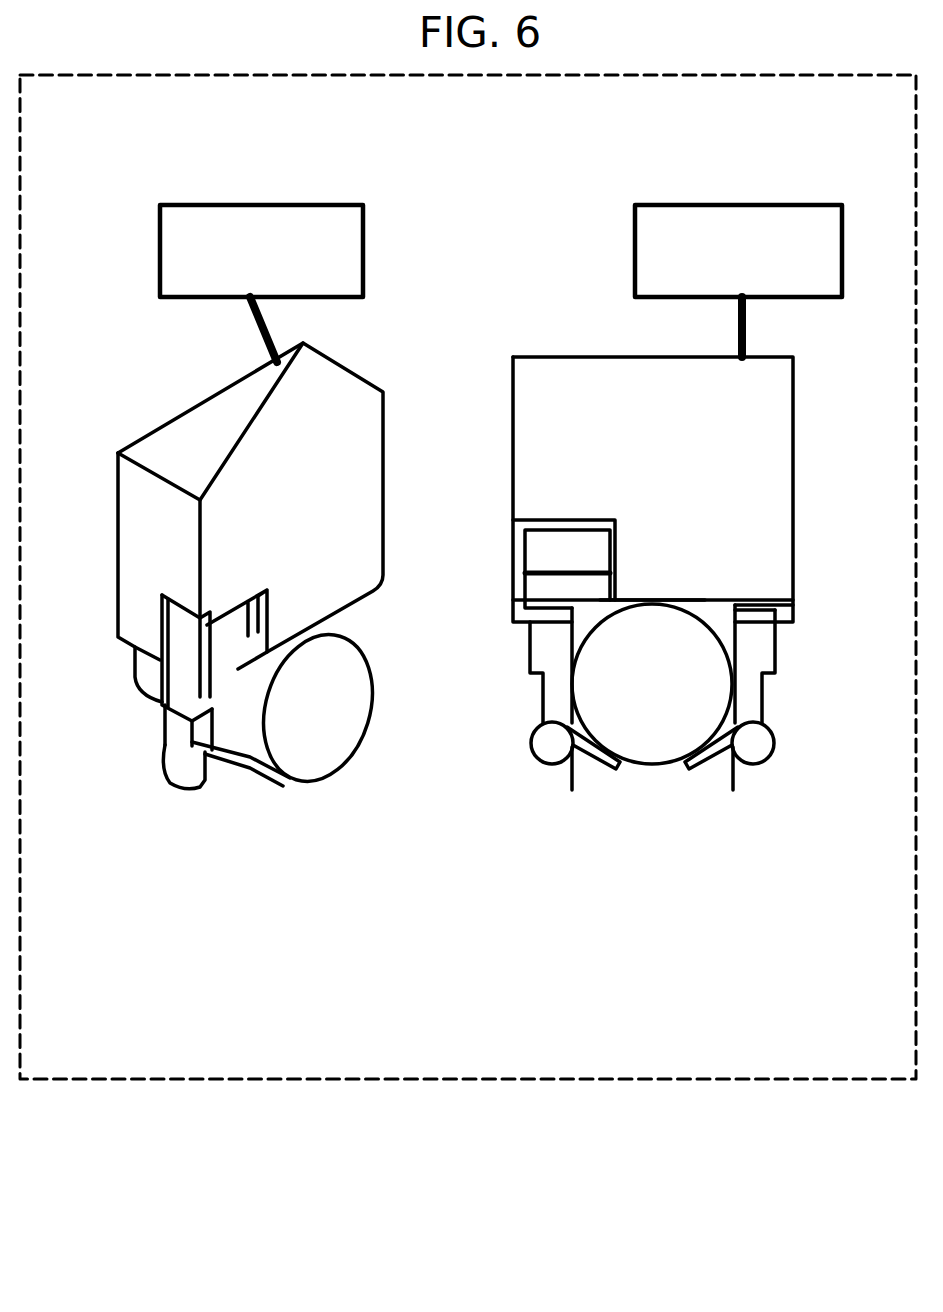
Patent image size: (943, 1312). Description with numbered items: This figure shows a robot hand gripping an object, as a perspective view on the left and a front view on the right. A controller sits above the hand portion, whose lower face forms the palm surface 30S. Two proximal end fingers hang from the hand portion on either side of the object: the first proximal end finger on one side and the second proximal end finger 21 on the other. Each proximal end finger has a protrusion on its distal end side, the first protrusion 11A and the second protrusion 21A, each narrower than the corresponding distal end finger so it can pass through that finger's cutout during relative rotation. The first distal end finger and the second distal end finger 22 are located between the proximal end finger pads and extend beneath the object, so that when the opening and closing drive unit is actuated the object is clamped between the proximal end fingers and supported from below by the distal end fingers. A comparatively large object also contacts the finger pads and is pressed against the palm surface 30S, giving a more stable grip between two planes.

The palm surface 30S is at (655, 603).
The first protrusion 11A is at (572, 777).
The second proximal end finger 21 is at (775, 657).
The second protrusion 21A is at (745, 787).
The second distal end finger 22 is at (707, 767).